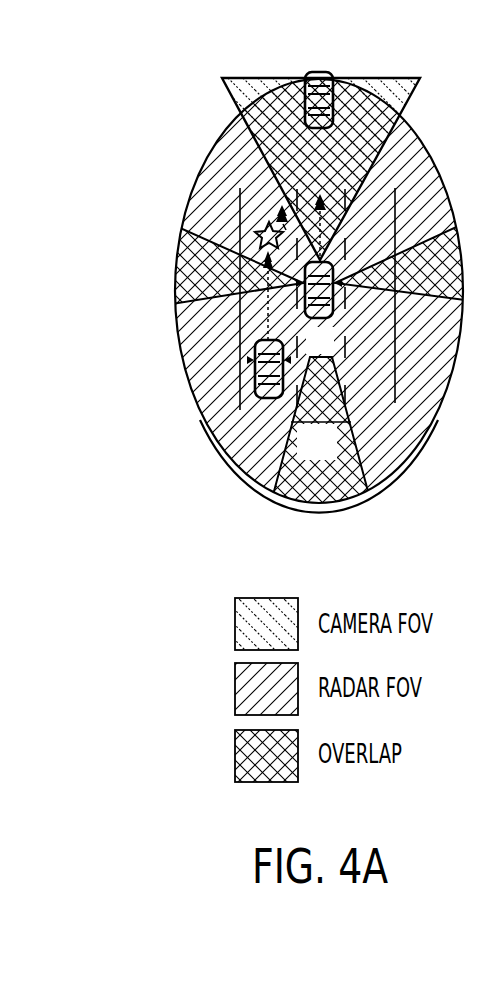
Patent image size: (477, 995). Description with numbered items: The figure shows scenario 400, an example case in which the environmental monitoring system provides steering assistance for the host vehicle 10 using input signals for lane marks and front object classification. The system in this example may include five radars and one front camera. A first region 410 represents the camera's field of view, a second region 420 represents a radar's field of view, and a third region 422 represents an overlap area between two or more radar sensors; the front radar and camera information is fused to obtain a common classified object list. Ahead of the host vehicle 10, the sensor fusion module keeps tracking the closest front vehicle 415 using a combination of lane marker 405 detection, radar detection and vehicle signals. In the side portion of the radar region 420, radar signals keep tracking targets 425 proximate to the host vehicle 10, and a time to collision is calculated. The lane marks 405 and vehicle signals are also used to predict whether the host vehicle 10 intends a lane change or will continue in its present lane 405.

The host vehicle 10 is at (333, 353).
The sensor field of view diagram 400 is at (472, 343).
The lane marker 405 is at (321, 433).
The first region 410 is at (378, 78).
The closest front vehicle 415 is at (318, 72).
The second region 420 is at (193, 182).
The third region 422 is at (337, 492).
The targets 425 is at (252, 392).